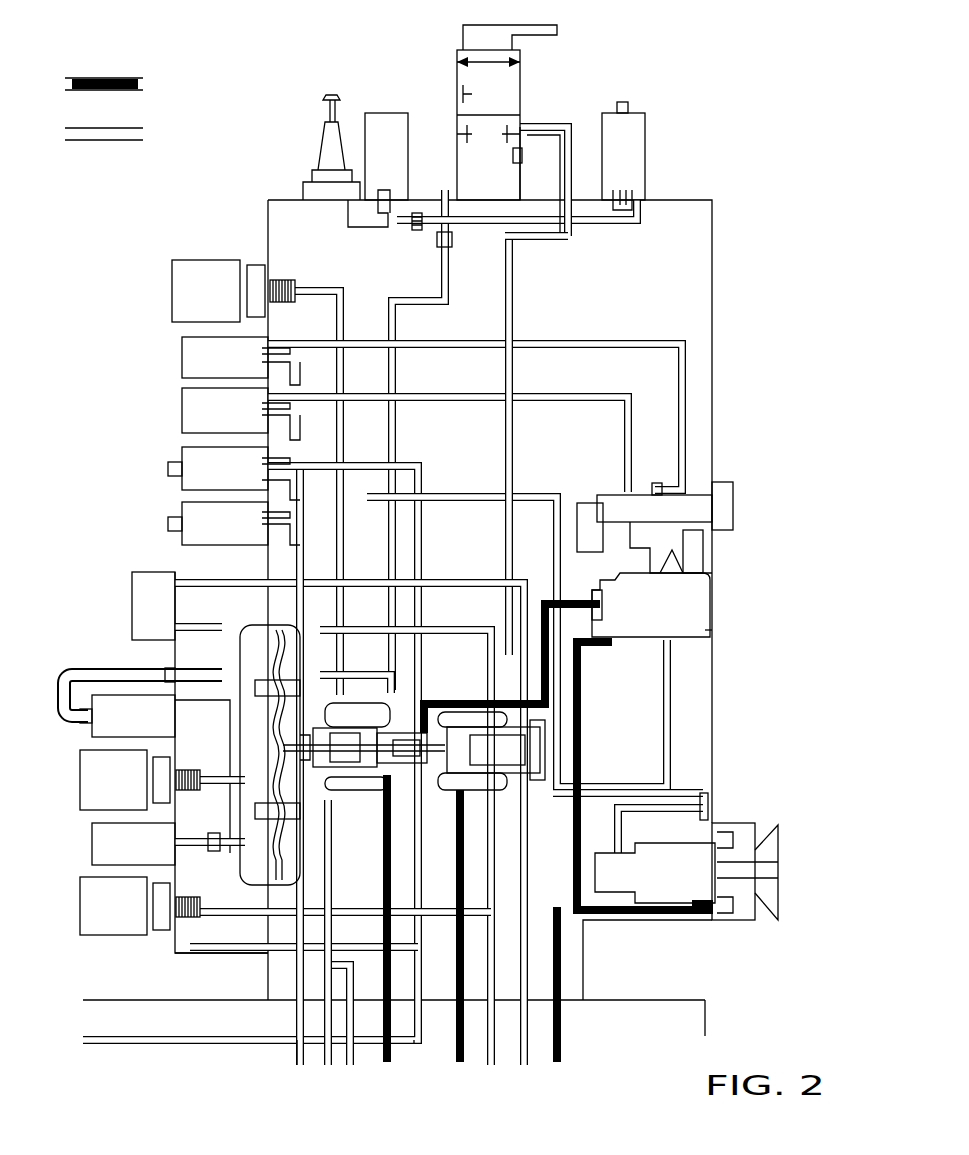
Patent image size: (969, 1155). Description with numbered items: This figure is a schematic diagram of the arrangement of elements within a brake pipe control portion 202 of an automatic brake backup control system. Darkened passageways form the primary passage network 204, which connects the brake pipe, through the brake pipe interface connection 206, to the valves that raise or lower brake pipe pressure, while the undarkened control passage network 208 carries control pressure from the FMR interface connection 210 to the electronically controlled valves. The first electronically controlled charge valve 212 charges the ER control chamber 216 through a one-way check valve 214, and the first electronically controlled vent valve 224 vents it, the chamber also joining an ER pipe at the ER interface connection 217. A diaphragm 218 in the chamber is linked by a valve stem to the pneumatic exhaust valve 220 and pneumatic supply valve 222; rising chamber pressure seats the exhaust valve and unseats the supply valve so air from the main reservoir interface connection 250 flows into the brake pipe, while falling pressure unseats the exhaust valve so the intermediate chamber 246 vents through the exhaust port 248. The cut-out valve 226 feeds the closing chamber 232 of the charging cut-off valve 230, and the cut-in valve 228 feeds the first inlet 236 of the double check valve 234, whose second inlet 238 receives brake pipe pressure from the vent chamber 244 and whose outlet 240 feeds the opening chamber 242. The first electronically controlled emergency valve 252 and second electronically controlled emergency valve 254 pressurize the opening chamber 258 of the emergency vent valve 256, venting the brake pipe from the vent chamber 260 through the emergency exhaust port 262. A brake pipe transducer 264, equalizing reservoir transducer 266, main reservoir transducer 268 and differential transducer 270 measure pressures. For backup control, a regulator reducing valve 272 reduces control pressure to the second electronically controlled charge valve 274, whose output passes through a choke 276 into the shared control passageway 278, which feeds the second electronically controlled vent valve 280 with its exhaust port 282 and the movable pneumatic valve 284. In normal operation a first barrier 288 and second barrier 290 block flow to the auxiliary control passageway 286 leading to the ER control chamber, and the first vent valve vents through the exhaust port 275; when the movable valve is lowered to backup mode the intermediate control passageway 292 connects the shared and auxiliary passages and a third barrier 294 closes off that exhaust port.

The brake pipe control portion 202 is at (712, 330).
The primary passage network 204 is at (125, 80).
The brake pipe interface connection 206 is at (556, 1066).
The control passage network 208 is at (125, 140).
The FMR interface connection 210 is at (415, 1046).
The first electronically controlled charge valve (1C valve) 212 is at (92, 848).
The one-way check valve 214 is at (214, 833).
The equalizing reservoir (ER) control chamber 216 is at (245, 860).
The ER interface connection 217 is at (300, 1068).
The diaphragm 218 is at (255, 760).
The pneumatic exhaust valve 220 is at (345, 792).
The pneumatic supply valve 222 is at (510, 792).
The first electronically controlled vent valve (1V valve) 224 is at (92, 718).
The cut-out valve 226 is at (182, 360).
The cut-in valve 228 is at (182, 412).
The charging cut-off valve 230 is at (712, 636).
The closing chamber 232 is at (705, 555).
The double check valve 234 is at (733, 505).
The first inlet 236 is at (657, 483).
The second inlet 238 is at (597, 500).
The outlet 240 is at (640, 580).
The opening chamber 242 is at (660, 548).
The vent chamber 244 is at (605, 648).
The intermediate chamber 246 is at (430, 765).
The exhaust port 248 is at (386, 1065).
The main reservoir interface connection 250 is at (460, 1066).
The first electronically controlled emergency valve (1E valve) 252 is at (170, 470).
The second electronically controlled emergency valve (2E valve) 254 is at (170, 525).
The emergency vent valve 256 is at (735, 922).
The opening chamber 258 is at (705, 825).
The vent chamber 260 is at (700, 915).
The emergency exhaust port 262 is at (775, 840).
The brake pipe transducer 264 is at (172, 295).
The equalizing reservoir transducer 266 is at (80, 785).
The main reservoir transducer 268 is at (80, 912).
The differential transducer 270 is at (132, 605).
The regulator reducing valve 272 is at (322, 135).
The second electronically controlled charge valve (2C valve) 274 is at (385, 113).
The exhaust port 275 is at (512, 155).
The choke 276 is at (415, 226).
The shared control passageway 278 is at (450, 250).
The second electronically controlled vent valve (2V valve) 280 is at (645, 150).
The exhaust port 282 is at (628, 106).
The movable pneumatic valve 284 is at (557, 30).
The auxiliary control passageway 286 is at (550, 127).
The first barrier 288 is at (460, 132).
The second barrier 290 is at (512, 132).
The intermediate control passageway 292 is at (457, 62).
The third barrier 294 is at (472, 94).